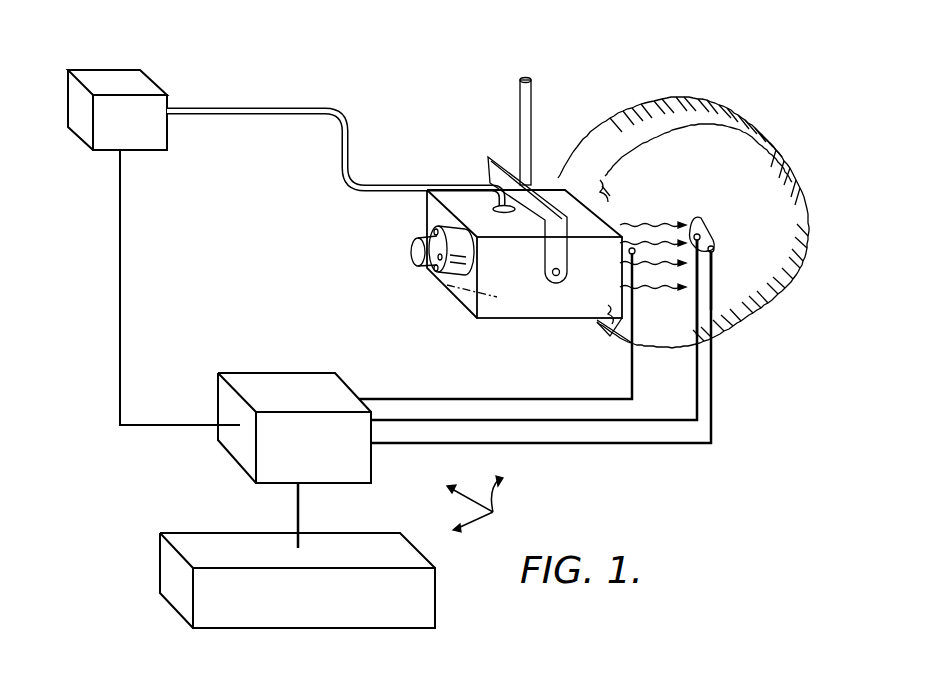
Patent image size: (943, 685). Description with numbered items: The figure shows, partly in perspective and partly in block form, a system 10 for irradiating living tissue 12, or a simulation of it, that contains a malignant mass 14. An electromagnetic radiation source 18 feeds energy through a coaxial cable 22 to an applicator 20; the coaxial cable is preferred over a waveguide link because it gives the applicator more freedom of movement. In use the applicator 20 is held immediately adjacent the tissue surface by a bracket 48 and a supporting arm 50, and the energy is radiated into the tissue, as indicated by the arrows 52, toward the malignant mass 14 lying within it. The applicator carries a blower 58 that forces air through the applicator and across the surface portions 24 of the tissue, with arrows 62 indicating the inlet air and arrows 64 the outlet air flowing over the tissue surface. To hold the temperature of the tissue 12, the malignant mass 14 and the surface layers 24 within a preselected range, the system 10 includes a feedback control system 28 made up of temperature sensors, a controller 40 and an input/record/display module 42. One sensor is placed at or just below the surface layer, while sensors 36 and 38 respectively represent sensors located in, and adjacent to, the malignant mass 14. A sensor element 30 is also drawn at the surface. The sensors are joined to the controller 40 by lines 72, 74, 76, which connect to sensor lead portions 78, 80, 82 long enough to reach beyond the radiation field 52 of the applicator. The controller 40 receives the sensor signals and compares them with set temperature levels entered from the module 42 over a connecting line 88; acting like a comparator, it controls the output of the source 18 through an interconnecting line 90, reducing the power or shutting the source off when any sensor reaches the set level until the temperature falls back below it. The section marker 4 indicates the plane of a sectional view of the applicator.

The system 10 is at (383, 74).
The living tissue 12 is at (752, 162).
The malignant mass 14 is at (700, 217).
The electromagnetic radiation source 18 is at (112, 88).
The applicator 20 is at (520, 312).
The coaxial cable 22 is at (343, 158).
The surface portions of the tissue 24 is at (636, 230).
The feedback control system 28 is at (485, 504).
The electrode 30 is at (628, 253).
The temperature sensor 36 is at (702, 236).
The temperature sensor 38 is at (715, 249).
The controller 40 is at (278, 380).
The input/record/display module 42 is at (192, 536).
The bracket 48 is at (500, 157).
The supporting arm 50 is at (533, 98).
The arrows indicating radiated energy 52 is at (660, 225).
The blower 58 is at (441, 274).
The inlet air arrows 62 is at (424, 234).
The outlet air arrows 64 is at (602, 182).
The line 72 is at (565, 397).
The line 74 is at (548, 420).
The line 76 is at (550, 443).
The sensor lead portion 78 is at (612, 342).
The sensor lead portion 80 is at (696, 332).
The sensor lead portion 82 is at (714, 304).
The connecting line 88 is at (296, 504).
The interconnecting line 90 is at (140, 272).
The section line 4 is at (372, 190).